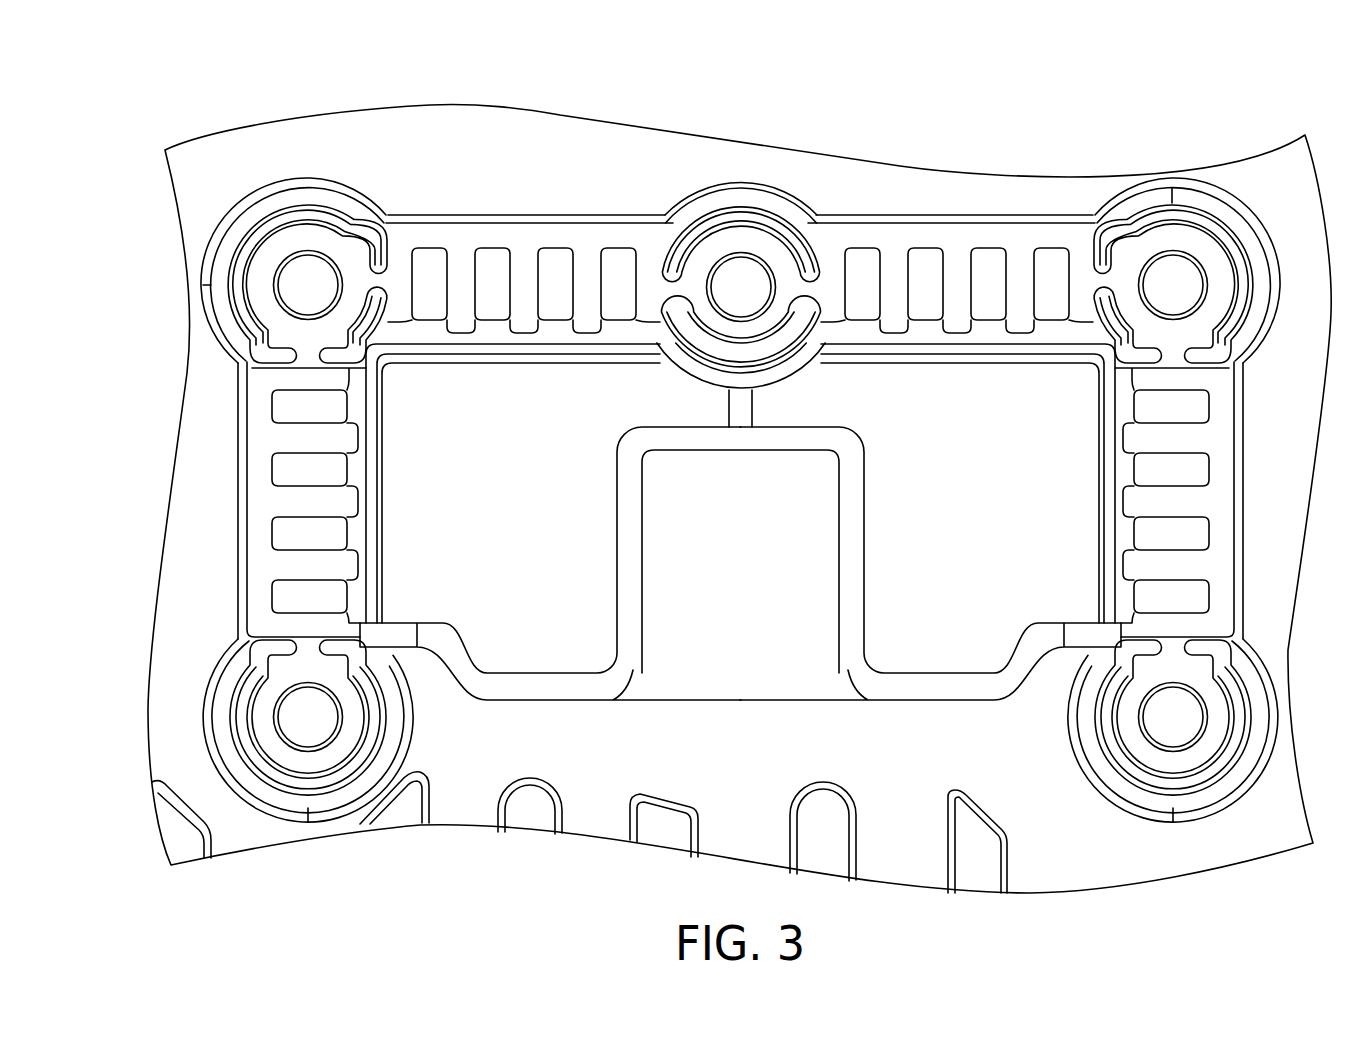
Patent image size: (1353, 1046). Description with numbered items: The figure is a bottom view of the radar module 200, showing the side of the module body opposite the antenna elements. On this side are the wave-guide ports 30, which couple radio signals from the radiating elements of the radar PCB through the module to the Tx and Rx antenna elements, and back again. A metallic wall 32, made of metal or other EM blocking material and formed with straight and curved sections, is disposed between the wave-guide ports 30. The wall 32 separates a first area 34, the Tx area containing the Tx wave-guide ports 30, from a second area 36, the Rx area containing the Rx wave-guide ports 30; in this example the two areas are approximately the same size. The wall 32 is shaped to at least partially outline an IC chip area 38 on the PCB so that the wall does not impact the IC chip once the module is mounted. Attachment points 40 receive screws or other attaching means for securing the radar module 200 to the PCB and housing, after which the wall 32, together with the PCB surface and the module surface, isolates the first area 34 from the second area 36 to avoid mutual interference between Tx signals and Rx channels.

The radar module 200 is at (1282, 116).
The wave-guide ports 30 is at (494, 258).
The metallic wall 32 is at (549, 673).
The first area 34 is at (492, 477).
The second area 36 is at (984, 480).
The IC chip area 38 is at (740, 564).
The attachment points 40 is at (300, 728).